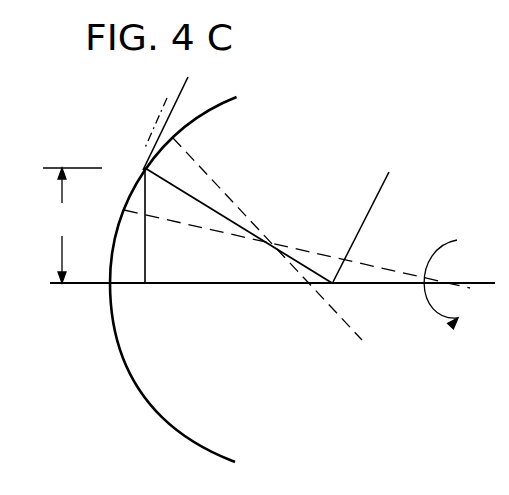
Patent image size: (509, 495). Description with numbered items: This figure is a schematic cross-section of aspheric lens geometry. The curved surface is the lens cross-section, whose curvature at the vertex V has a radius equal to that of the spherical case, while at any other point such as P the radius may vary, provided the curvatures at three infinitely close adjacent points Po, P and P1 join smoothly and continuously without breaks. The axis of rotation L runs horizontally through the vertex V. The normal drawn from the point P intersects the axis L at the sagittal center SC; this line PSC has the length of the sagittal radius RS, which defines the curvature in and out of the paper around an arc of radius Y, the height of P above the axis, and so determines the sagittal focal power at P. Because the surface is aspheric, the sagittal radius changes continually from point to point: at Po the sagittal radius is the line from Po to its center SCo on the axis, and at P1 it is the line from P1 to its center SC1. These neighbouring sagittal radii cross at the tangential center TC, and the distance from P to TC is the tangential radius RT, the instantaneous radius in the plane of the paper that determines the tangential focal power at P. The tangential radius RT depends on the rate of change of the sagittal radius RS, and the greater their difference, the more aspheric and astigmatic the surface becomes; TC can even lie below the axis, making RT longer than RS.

The sagittal radius RS is at (181, 89).
The axis of rotation L is at (279, 283).
The vertex V is at (108, 287).
The arc radius Y is at (72, 225).
The surface point P is at (150, 180).
The adjacent surface point P1 is at (253, 208).
The adjacent surface point Po is at (276, 235).
The tangential radius RT is at (188, 192).
The tangential center TC is at (269, 240).
The sagittal center SC is at (333, 287).
The sagittal center for P1 SC1 is at (305, 287).
The sagittal center for Po SCo is at (463, 265).
The normal line from P to SC PSC is at (391, 408).